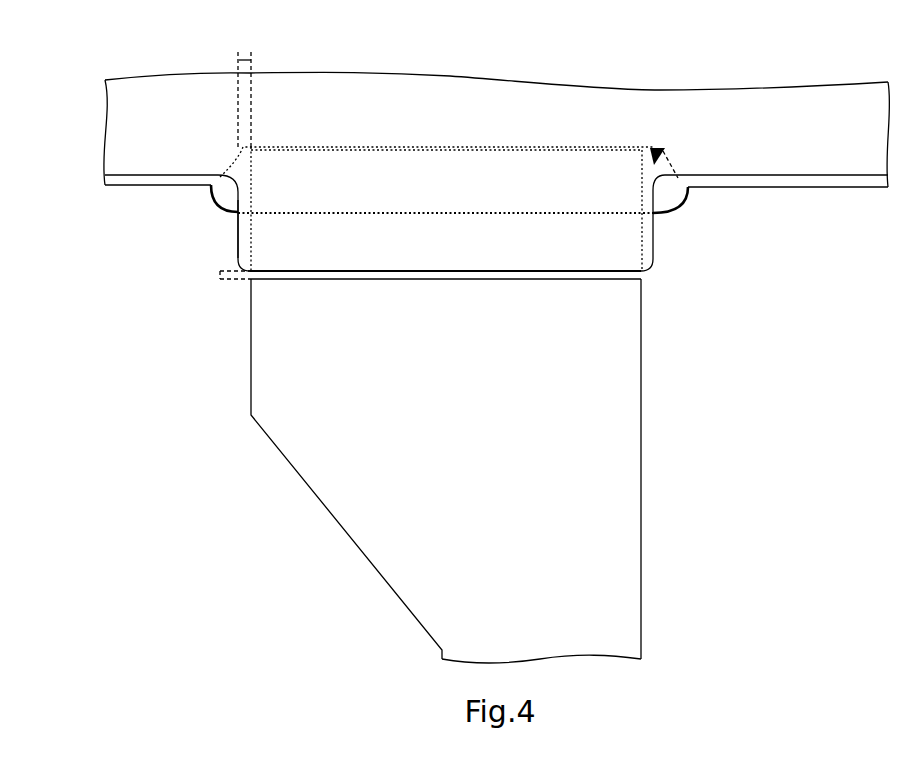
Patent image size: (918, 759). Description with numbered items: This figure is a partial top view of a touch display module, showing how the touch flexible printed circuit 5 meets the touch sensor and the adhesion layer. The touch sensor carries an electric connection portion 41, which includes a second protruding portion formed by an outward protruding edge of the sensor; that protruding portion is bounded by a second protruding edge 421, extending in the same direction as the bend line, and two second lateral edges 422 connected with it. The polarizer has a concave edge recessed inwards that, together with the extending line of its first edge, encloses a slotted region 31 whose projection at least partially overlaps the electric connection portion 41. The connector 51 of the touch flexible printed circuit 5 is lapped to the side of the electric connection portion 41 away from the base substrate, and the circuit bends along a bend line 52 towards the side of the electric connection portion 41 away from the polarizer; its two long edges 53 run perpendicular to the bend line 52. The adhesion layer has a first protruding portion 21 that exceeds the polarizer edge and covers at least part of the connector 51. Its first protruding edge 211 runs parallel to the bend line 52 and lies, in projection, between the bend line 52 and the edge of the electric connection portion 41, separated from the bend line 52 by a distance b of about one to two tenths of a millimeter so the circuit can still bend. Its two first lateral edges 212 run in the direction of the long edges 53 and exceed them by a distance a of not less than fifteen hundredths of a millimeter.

The touch flexible printed circuit 5 is at (449, 471).
The connector 51 is at (434, 163).
The bend line 52 is at (432, 280).
The long edges 53 is at (251, 378).
The first protruding portion 21 is at (659, 251).
The first protruding edge 211 is at (548, 273).
The first lateral edges 212 is at (238, 246).
The slotted region 31 is at (656, 147).
The electric connection portion 41 is at (674, 205).
The second protruding edge 421 is at (343, 216).
The second lateral edges 422 is at (223, 198).
The distance a is at (246, 58).
The distance b is at (219, 275).